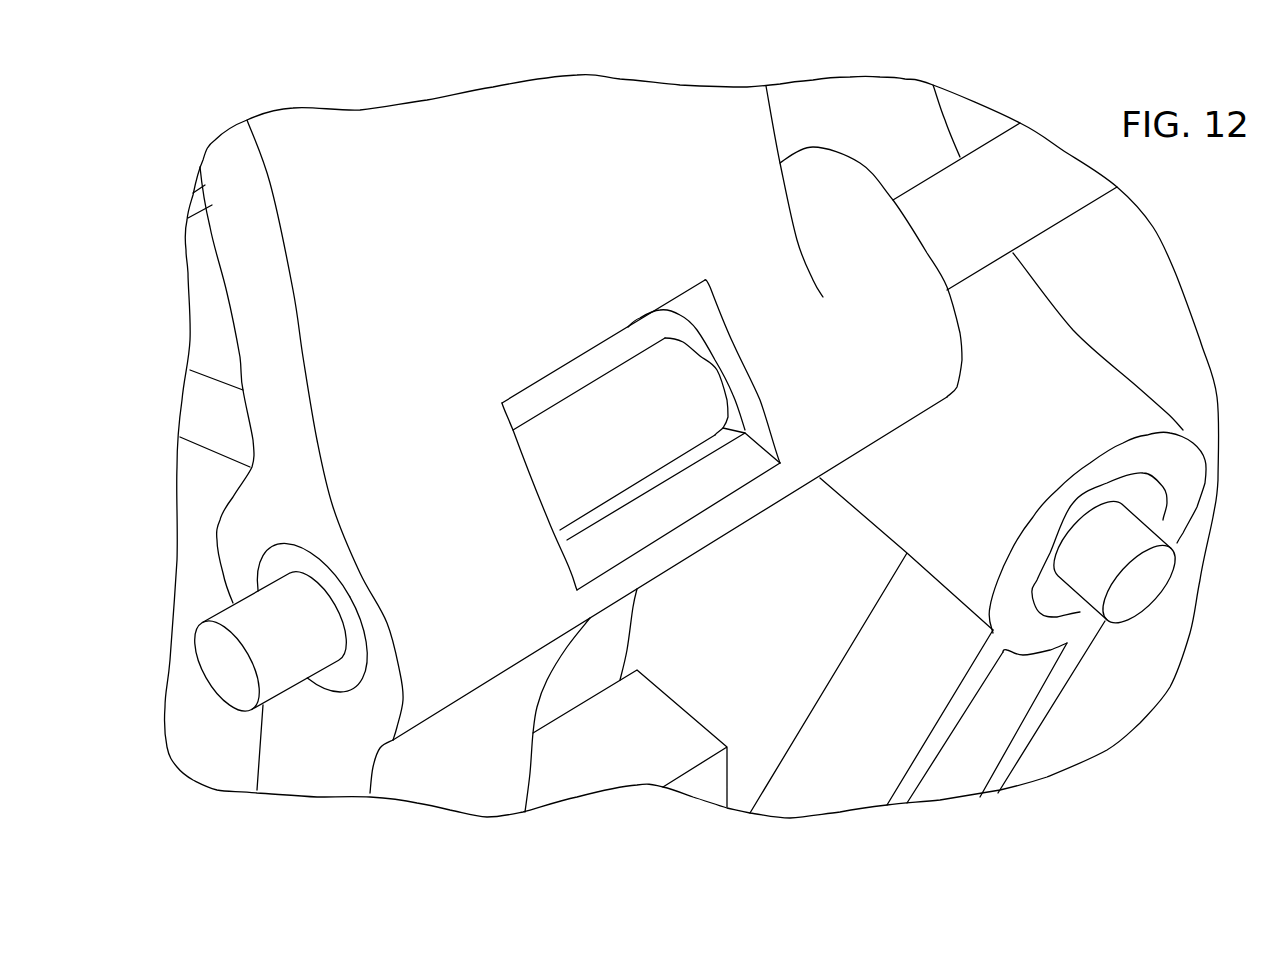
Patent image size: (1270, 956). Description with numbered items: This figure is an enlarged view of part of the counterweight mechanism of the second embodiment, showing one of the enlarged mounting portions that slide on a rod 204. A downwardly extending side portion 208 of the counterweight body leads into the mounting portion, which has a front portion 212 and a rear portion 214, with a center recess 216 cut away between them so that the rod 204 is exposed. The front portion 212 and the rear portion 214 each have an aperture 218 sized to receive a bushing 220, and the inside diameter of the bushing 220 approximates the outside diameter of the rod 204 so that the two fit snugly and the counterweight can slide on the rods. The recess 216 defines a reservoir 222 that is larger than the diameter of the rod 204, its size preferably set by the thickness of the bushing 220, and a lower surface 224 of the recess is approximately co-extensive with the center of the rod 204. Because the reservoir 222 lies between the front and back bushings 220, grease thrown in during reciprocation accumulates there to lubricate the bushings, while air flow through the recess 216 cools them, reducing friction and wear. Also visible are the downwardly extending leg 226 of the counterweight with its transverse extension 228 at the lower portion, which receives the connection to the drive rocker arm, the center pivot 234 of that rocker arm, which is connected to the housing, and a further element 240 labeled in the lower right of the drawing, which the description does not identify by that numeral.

The rod 204 is at (1003, 180).
The side portion 208 is at (548, 145).
The front portion 212 is at (463, 643).
The rear portion 214 is at (918, 368).
The center recess 216 is at (563, 373).
The aperture 218 is at (347, 677).
The bushing 220 is at (657, 328).
The reservoir 222 is at (688, 460).
The lower surface 224 is at (648, 520).
The leg 226 is at (440, 770).
The transverse extension 228 is at (650, 720).
The center pivot 234 is at (1138, 582).
The slot 240 is at (992, 727).